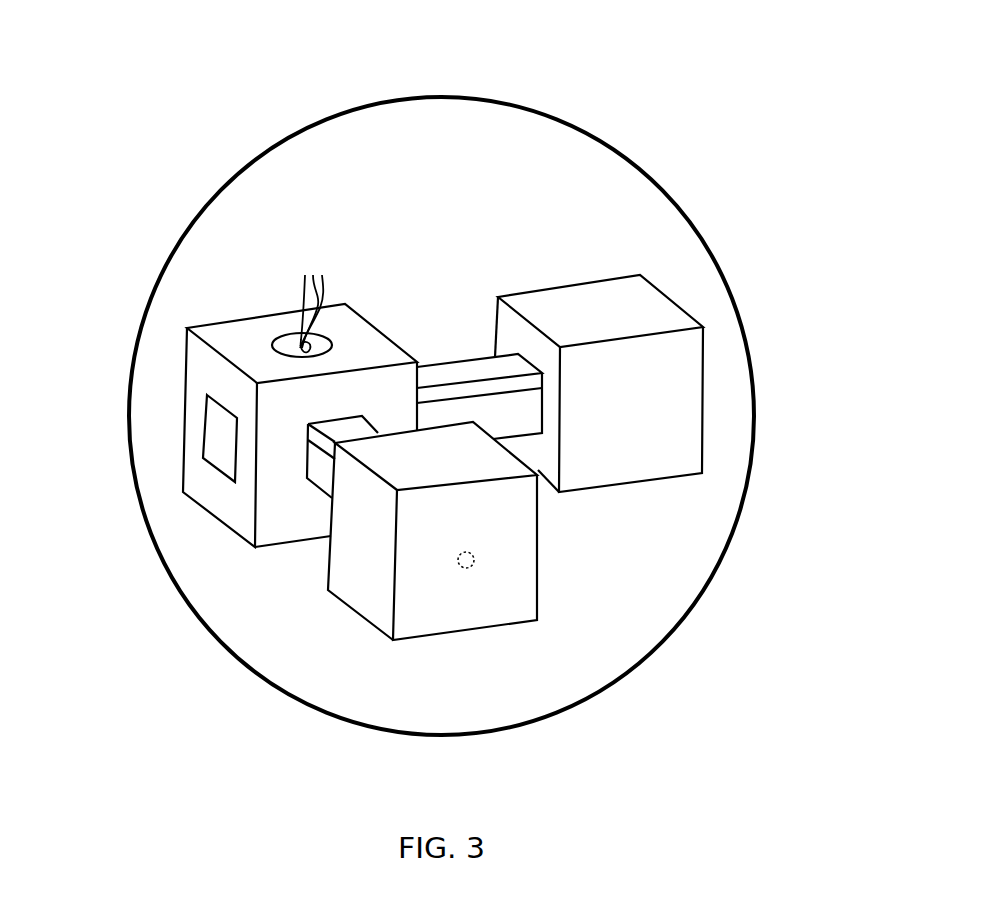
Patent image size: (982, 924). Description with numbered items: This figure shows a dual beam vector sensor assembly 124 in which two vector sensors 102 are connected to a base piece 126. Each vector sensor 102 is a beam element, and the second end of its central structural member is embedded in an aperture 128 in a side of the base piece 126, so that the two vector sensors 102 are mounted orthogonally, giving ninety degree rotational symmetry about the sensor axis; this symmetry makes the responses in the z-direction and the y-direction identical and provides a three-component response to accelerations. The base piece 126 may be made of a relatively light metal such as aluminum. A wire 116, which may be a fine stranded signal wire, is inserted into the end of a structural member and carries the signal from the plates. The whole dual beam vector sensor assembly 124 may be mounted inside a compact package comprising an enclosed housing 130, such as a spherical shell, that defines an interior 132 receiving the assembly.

The vector sensor 102 is at (628, 312).
The wire 116 is at (327, 298).
The dual beam vector sensor assembly 124 is at (478, 273).
The base piece 126 is at (217, 332).
The aperture 128 is at (227, 435).
The enclosed housing 130 is at (758, 417).
The interior 132 is at (380, 173).